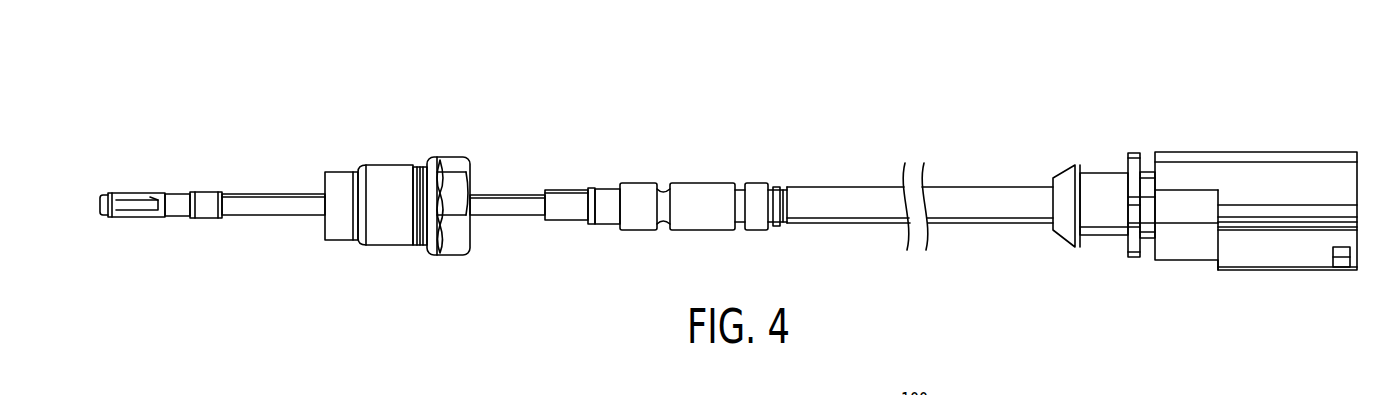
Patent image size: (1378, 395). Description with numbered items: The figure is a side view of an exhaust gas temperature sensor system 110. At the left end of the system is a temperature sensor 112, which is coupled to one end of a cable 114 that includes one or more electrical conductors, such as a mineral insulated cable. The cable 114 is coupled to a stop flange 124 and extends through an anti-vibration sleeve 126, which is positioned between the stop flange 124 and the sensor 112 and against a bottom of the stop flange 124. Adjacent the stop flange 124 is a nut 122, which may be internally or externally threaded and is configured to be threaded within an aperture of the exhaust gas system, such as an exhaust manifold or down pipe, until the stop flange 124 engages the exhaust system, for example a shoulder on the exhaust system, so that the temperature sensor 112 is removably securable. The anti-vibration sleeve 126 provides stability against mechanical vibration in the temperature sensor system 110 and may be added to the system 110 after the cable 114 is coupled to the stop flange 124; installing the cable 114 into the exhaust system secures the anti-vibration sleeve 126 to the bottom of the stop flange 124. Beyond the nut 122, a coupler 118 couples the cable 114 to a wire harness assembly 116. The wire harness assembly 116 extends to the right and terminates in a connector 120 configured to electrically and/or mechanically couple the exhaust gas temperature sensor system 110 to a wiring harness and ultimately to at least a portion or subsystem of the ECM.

The temperature sensor system 110 is at (804, 88).
The temperature sensor 112 is at (140, 215).
The cable 114 is at (248, 203).
The wire harness assembly 116 is at (830, 195).
The coupler 118 is at (640, 197).
The connector 120 is at (1225, 150).
The nut 122 is at (462, 257).
The stop flange 124 is at (338, 232).
The anti-vibration sleeve 126 is at (317, 215).